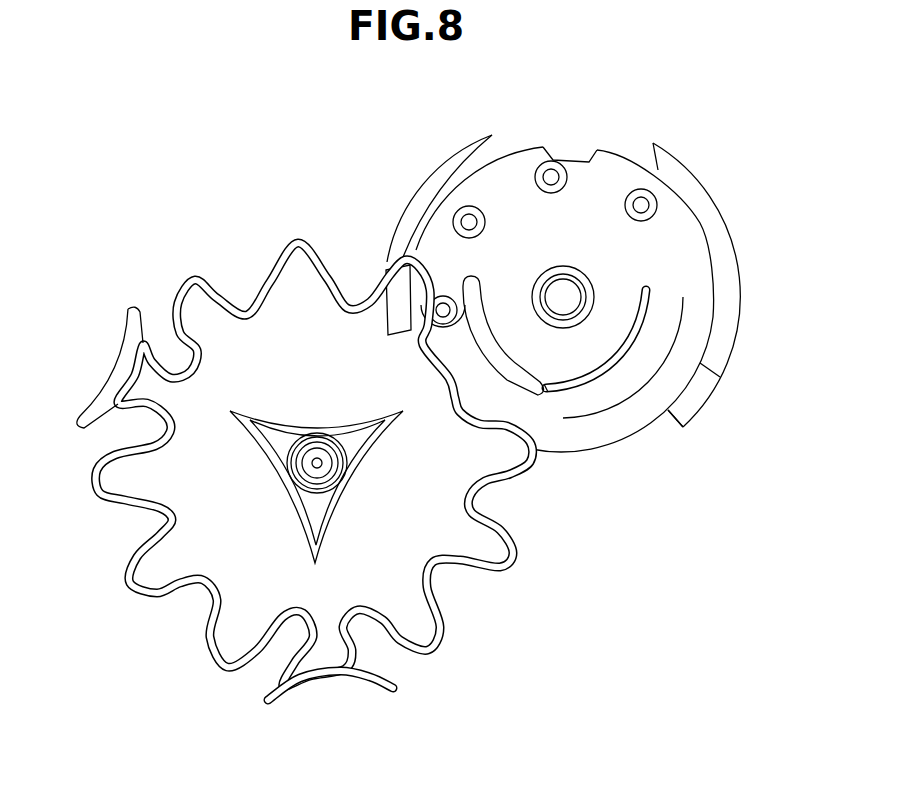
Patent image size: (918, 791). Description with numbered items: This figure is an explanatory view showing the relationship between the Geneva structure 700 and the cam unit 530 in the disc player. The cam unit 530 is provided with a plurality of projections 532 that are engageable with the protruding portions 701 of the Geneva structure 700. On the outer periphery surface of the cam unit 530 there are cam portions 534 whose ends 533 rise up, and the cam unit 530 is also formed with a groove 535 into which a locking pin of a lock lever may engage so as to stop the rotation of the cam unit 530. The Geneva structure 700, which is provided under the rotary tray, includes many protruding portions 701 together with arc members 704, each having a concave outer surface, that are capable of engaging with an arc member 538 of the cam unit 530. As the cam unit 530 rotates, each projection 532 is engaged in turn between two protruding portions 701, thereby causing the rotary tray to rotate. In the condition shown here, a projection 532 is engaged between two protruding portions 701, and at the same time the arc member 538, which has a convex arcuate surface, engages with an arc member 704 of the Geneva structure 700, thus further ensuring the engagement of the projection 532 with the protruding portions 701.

The cam unit 530 is at (549, 288).
The projections 532 is at (425, 262).
The ends 533 is at (390, 318).
The cam portions 534 is at (413, 180).
The groove 535 is at (552, 156).
The arc member 538 is at (647, 327).
The Geneva structure 700 is at (341, 500).
The protruding portions 701 is at (510, 565).
The arc members 704 is at (488, 358).